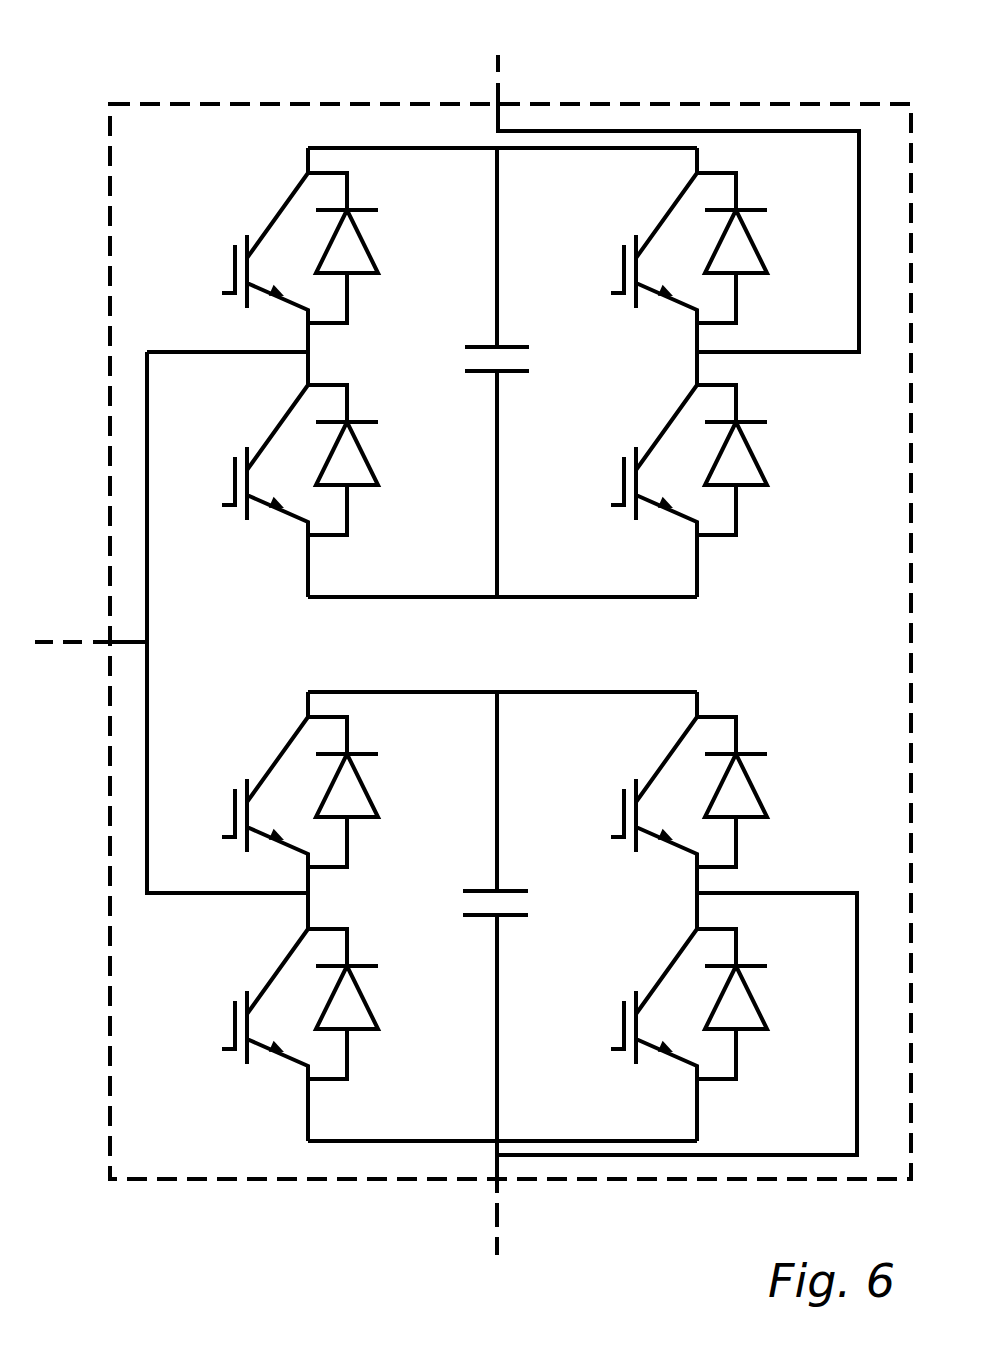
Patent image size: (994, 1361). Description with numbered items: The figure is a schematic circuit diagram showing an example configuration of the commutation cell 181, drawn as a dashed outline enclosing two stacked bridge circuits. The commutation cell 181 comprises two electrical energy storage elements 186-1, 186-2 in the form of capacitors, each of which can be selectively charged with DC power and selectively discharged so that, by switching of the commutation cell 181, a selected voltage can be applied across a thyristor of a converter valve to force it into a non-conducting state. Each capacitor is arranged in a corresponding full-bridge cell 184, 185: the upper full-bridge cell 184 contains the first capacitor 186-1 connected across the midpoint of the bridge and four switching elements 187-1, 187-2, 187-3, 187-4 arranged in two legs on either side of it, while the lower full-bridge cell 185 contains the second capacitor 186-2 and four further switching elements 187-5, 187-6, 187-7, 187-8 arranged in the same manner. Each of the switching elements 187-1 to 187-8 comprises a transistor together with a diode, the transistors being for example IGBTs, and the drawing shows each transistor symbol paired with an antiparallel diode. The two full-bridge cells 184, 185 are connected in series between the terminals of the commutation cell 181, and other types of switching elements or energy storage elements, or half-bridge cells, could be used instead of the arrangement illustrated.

The commutation cell 181 is at (179, 104).
The full-bridge cell 184 is at (777, 593).
The full-bridge cell 185 is at (185, 1094).
The electrical energy storage element 186-1 is at (480, 336).
The electrical energy storage element 186-2 is at (480, 873).
The switching element 187-1 is at (256, 218).
The switching element 187-2 is at (605, 232).
The switching element 187-3 is at (260, 557).
The switching element 187-4 is at (754, 409).
The switching element 187-5 is at (257, 757).
The switching element 187-6 is at (627, 762).
The switching element 187-7 is at (262, 983).
The switching element 187-8 is at (750, 1048).